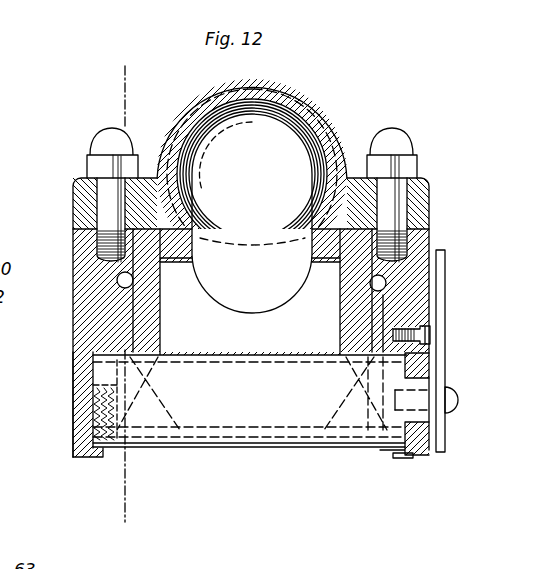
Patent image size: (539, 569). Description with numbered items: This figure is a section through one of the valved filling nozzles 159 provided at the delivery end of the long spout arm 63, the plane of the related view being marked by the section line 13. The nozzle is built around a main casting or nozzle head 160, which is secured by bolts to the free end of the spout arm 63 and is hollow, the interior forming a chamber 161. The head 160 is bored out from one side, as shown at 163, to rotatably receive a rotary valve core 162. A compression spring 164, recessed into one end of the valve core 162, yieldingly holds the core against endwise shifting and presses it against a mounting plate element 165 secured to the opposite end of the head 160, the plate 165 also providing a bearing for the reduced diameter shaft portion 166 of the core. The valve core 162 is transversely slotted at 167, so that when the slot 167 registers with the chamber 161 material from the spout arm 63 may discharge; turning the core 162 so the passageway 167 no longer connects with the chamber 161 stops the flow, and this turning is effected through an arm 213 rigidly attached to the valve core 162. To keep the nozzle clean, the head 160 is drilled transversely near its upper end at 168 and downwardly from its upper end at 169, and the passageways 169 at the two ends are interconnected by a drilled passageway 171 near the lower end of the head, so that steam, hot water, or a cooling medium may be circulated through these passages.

The section line 13— 13 is at (162, 80).
The spout arm 63 is at (328, 127).
The nozzle head casting 160 is at (82, 300).
The hollow chamber 161 is at (185, 319).
The vertical passageway 169 is at (78, 341).
The bore 163 is at (155, 350).
The transverse passageway 168 is at (117, 279).
The valved nozzle 159 is at (82, 358).
The compression spring 164 is at (80, 402).
The transverse slot 167 is at (160, 412).
The drilled passageway 171 is at (303, 404).
The rotary valve core 162 is at (223, 412).
The reduced diameter shaft portion 166 is at (400, 438).
The mounting plate element 165 is at (422, 458).
The arm 213 is at (438, 288).